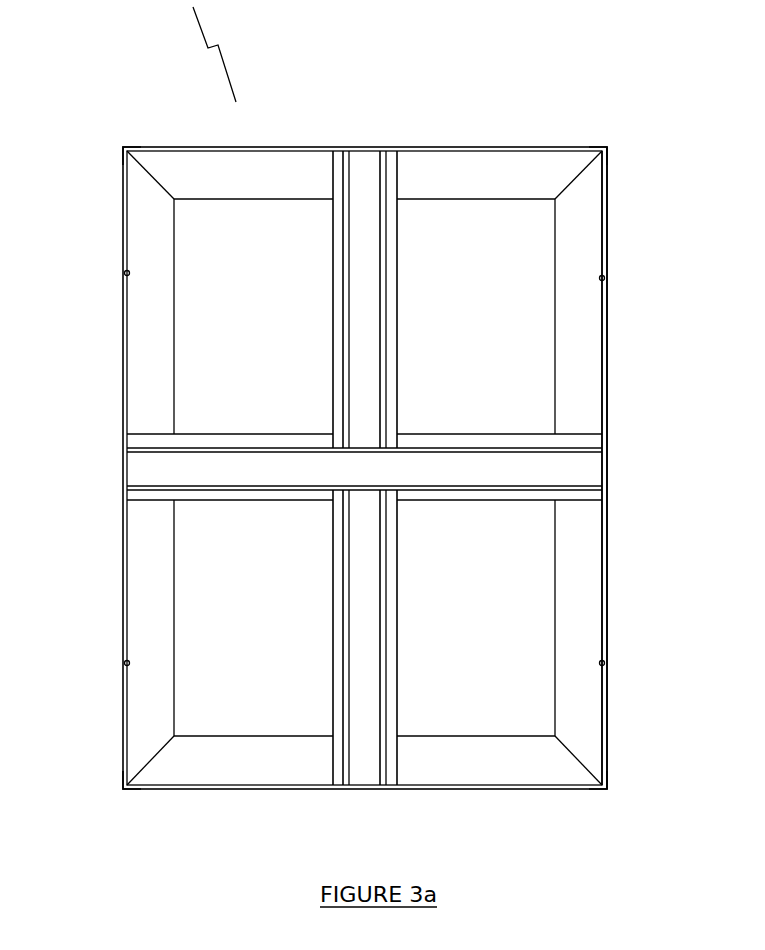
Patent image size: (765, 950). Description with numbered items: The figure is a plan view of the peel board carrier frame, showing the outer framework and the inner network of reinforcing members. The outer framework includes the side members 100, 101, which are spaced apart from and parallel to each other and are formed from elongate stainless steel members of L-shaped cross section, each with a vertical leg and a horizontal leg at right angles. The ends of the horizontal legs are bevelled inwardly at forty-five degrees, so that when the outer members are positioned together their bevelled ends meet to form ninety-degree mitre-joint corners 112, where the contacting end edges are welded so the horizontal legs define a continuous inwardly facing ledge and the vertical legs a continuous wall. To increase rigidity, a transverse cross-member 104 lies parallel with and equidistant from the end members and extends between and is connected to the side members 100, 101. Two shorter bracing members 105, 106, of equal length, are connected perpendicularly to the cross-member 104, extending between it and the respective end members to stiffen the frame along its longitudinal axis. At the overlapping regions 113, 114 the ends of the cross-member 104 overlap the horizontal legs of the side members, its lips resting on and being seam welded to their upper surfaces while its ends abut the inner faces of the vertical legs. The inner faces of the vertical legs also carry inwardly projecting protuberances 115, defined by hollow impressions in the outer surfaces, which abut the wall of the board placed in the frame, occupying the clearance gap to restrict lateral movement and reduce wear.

The side member 100 is at (120, 595).
The side member 101 is at (607, 363).
The transverse cross-member 104 is at (157, 469).
The bracing member 105 is at (372, 739).
The bracing member 106 is at (353, 177).
The mitre-joint corner 112 is at (371, 469).
The overlapping region 113 is at (322, 383).
The overlapping region 114 is at (409, 550).
The protuberance 115 is at (120, 273).